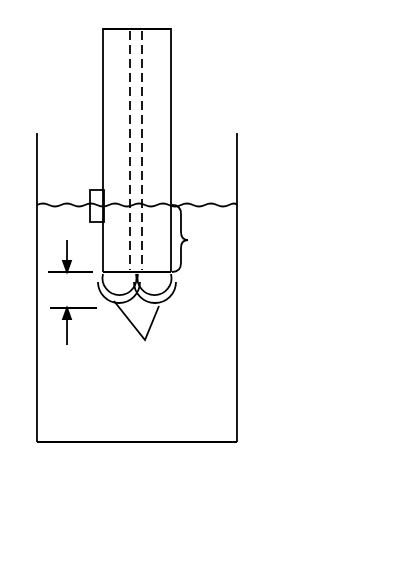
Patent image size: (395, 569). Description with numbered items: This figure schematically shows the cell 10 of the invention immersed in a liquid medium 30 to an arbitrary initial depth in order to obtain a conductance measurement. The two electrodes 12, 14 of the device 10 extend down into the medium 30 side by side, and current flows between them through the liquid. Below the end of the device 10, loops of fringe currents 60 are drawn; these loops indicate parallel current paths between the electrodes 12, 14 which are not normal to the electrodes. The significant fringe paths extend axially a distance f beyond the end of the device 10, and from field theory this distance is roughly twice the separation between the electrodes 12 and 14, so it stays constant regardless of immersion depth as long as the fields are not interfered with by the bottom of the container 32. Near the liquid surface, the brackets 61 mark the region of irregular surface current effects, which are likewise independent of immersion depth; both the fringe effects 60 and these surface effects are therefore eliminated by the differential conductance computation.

The cell 10 is at (233, 80).
The electrode 12 is at (128, 37).
The electrode 14 is at (171, 116).
The medium 30 is at (58, 420).
The bottom of the container 32 is at (208, 443).
The fringe currents 60 is at (138, 322).
The brackets 61 is at (96, 190).